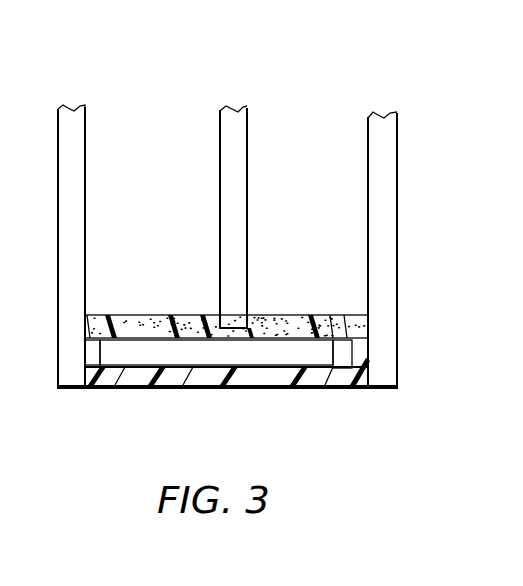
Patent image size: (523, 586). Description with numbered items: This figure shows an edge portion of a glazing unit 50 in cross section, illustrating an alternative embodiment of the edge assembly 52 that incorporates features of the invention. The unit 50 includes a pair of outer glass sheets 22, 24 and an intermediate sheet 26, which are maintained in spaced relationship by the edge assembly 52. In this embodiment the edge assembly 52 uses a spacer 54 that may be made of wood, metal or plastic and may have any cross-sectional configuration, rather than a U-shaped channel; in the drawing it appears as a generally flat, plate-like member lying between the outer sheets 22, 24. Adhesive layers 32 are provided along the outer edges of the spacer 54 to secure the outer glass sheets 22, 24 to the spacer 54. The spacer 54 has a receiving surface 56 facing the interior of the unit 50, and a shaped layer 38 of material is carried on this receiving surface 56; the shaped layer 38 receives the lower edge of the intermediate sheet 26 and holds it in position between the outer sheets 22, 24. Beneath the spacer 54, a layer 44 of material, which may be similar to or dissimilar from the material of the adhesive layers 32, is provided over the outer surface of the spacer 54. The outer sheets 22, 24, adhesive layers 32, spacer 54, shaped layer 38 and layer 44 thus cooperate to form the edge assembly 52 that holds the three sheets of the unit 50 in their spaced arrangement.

The outer sheet 22 is at (397, 140).
The outer sheet 24 is at (58, 250).
The intermediate sheet 26 is at (240, 108).
The adhesive layer 32 is at (90, 348).
The shaped layer 38 is at (145, 315).
The layer 44 is at (194, 389).
The unit 50 is at (312, 113).
The edge assembly 52 is at (124, 394).
The spacer 54 is at (267, 368).
The receiving surface 56 is at (333, 370).